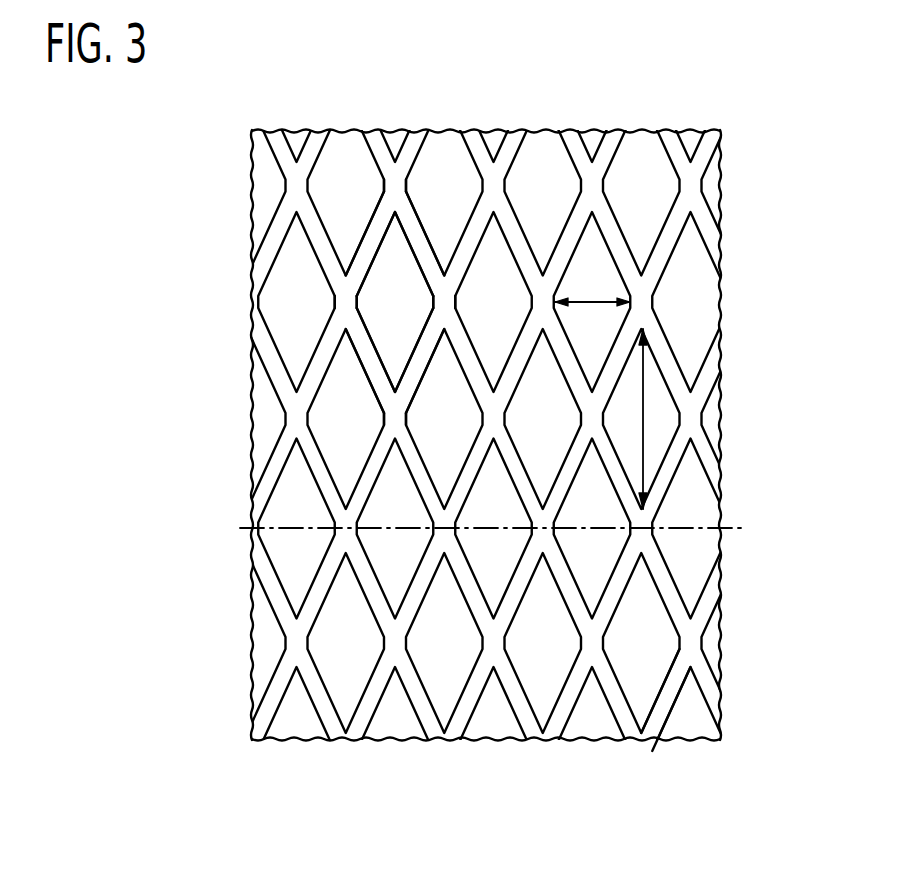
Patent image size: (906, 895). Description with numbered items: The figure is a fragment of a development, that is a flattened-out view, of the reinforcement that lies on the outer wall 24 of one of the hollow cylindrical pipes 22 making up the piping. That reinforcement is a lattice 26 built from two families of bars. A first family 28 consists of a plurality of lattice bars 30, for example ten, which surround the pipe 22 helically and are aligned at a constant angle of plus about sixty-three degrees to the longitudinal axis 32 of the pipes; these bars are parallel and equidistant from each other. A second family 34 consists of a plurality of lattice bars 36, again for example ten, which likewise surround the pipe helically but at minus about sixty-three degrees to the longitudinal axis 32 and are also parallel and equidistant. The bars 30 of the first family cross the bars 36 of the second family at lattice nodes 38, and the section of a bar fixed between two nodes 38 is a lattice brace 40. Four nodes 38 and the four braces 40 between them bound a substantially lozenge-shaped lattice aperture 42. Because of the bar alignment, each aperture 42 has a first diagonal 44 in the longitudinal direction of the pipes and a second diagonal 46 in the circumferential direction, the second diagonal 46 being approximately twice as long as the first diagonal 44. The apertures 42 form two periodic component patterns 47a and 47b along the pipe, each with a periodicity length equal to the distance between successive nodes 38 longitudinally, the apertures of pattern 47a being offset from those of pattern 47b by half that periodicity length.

The pipe 22 is at (690, 317).
The outer wall 24 is at (690, 250).
The lattice 26 is at (687, 128).
The first family 28 is at (621, 108).
The lattice bar 30 is at (613, 135).
The longitudinal axis 32 is at (693, 519).
The second family 34 is at (676, 718).
The lattice bar 36 is at (332, 718).
The lattice node 38 is at (383, 409).
The lattice brace 40 is at (427, 352).
The lattice aperture 42 is at (407, 303).
The first diagonal 44 is at (588, 300).
The second diagonal 46 is at (643, 408).
The component pattern 47a is at (613, 559).
The component pattern 47b is at (663, 648).